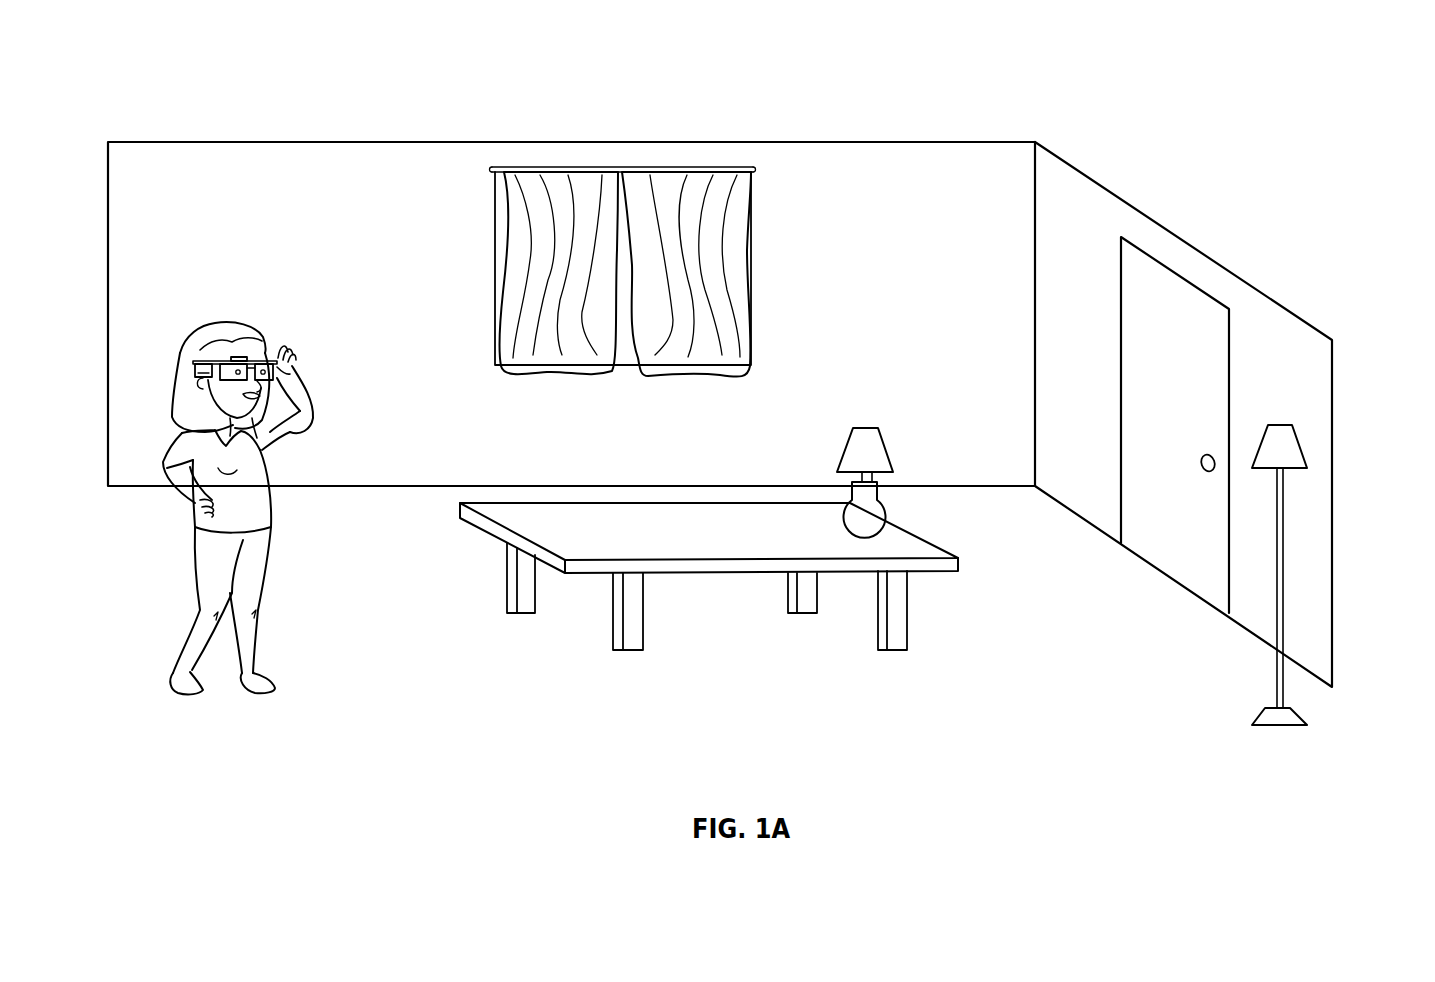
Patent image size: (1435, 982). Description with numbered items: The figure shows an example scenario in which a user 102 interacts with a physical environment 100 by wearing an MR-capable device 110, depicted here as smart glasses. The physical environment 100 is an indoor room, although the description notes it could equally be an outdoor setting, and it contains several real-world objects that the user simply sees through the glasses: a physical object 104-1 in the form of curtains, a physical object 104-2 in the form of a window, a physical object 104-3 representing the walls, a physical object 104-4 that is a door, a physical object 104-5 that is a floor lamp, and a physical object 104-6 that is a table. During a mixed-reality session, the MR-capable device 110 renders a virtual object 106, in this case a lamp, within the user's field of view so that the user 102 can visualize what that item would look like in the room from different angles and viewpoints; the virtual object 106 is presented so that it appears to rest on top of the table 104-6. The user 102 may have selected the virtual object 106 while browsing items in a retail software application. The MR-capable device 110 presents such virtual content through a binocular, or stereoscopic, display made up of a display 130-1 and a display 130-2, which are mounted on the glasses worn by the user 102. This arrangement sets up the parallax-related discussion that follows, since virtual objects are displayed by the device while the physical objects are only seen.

The physical environment 100 is at (1122, 60).
The user 102 is at (235, 330).
The physical object (curtains) 104-1 is at (668, 166).
The physical object (window) 104-2 is at (753, 217).
The physical object (walls) 104-3 is at (1088, 202).
The physical object (door) 104-4 is at (1192, 313).
The physical object (floor lamp) 104-5 is at (1283, 423).
The physical object (table) 104-6 is at (638, 515).
The virtual object 106 is at (875, 427).
The MR-capable device 110 is at (272, 355).
The display 130-1 is at (282, 376).
The display 130-2 is at (195, 375).